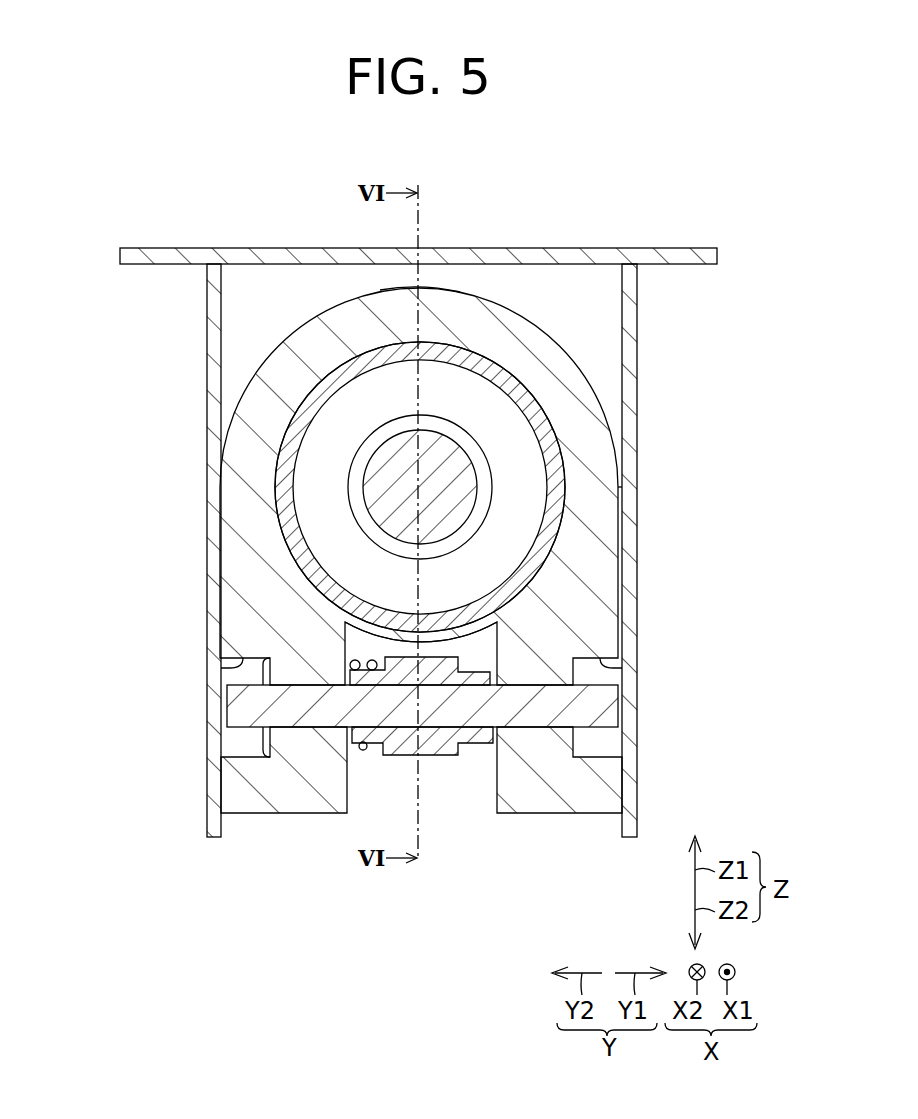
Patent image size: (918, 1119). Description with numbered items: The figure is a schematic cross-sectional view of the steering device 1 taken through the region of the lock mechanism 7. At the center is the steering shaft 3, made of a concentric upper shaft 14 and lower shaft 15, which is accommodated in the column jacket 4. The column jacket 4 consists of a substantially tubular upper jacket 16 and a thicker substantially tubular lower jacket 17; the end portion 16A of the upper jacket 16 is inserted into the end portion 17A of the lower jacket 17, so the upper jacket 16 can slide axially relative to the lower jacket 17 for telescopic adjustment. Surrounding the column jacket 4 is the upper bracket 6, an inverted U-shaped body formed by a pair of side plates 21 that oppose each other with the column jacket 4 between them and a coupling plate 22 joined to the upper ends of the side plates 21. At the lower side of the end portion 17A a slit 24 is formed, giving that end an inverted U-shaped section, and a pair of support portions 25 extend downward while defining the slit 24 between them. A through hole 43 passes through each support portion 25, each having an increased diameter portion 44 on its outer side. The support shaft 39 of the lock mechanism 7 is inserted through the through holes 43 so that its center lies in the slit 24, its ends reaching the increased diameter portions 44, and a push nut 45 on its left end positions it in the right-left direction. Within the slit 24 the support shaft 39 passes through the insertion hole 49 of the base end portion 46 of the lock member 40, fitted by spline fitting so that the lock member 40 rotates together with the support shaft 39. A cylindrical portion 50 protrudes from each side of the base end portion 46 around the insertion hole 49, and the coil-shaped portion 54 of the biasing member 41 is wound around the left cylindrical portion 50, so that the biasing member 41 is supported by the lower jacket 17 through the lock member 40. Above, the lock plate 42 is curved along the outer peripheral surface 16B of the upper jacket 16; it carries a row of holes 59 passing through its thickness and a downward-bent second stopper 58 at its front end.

The steering device 1 is at (430, 948).
The steering shaft 3 is at (150, 415).
The column jacket 4 is at (690, 415).
The upper bracket 6 is at (666, 234).
The lock mechanism 7 is at (383, 768).
The upper shaft 14 is at (358, 455).
The lower shaft 15 is at (372, 488).
The upper jacket 16 is at (570, 472).
The end portion of the upper jacket 16A is at (525, 393).
The outer peripheral surface of the upper jacket 16B is at (572, 497).
The lower jacket 17 is at (602, 423).
The end portion of the lower jacket 17A is at (500, 318).
The side plate 21 is at (206, 335).
The coupling plate 22 is at (562, 250).
The slit 24 is at (490, 768).
The support portion 25 is at (243, 803).
The support shaft 39 is at (228, 705).
The lock member 40 is at (402, 760).
The biasing member 41 is at (344, 549).
The lock plate 42 is at (440, 636).
The through hole 43 is at (310, 720).
The increased diameter portion 44 is at (228, 666).
The push nut 45 is at (264, 734).
The base end portion 46 is at (438, 748).
The insertion hole 49 is at (463, 682).
The cylindrical portion 50 is at (338, 728).
The coil-shaped portion 54 is at (355, 660).
The second stopper 58 is at (375, 660).
The hole 59 is at (455, 290).